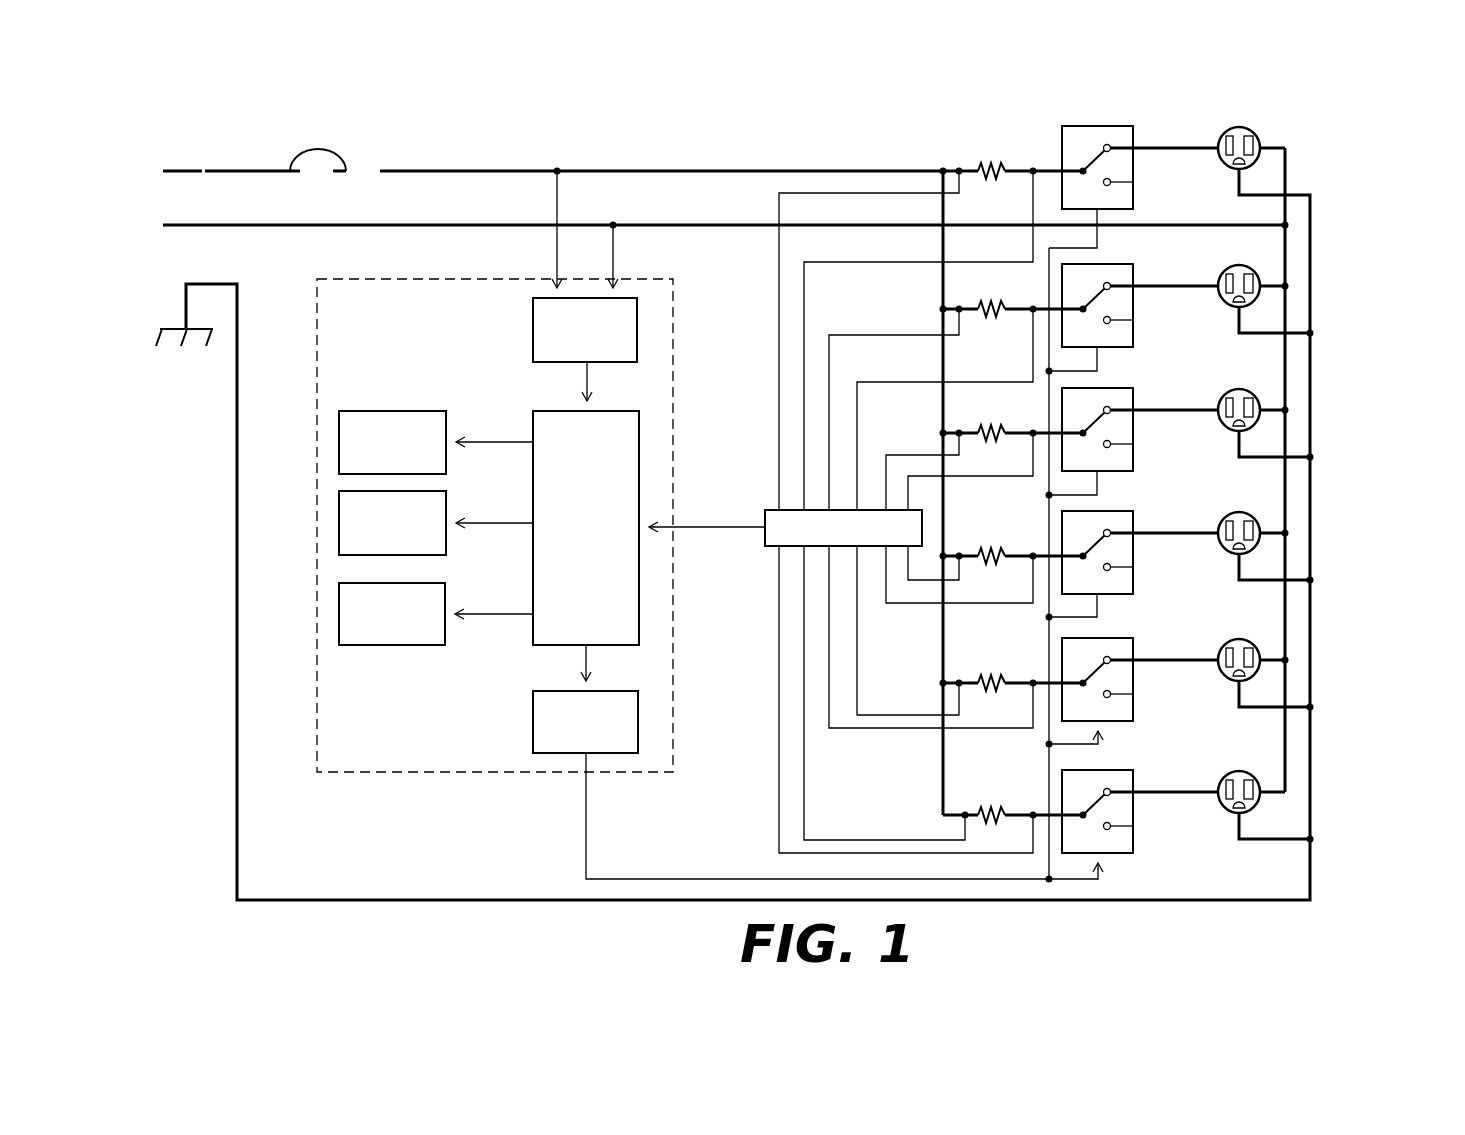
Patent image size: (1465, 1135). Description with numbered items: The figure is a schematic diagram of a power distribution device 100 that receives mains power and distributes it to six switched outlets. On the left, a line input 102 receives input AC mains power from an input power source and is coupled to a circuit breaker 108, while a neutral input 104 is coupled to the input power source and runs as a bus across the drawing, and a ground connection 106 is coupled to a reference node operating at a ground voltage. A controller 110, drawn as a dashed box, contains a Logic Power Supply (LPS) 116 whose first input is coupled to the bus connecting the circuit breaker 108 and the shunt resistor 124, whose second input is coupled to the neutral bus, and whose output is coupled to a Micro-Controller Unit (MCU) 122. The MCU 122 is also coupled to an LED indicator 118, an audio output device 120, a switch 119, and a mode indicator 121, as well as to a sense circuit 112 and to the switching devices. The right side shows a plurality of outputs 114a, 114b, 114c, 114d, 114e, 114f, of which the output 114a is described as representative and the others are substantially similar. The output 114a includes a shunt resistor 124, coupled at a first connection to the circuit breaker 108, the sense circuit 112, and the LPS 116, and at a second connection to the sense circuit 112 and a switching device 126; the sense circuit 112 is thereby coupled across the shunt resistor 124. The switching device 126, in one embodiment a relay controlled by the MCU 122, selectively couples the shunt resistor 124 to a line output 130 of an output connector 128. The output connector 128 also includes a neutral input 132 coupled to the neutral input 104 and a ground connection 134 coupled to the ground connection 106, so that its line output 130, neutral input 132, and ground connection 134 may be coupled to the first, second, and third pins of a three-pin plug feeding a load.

The power distribution device 100 is at (210, 120).
The line input 102 is at (163, 170).
The neutral input 104 is at (163, 225).
The ground connection 106 is at (170, 329).
The circuit breaker 108 is at (340, 150).
The controller 110 is at (315, 278).
The sense circuit 112 is at (768, 508).
The output 114a is at (1172, 157).
The output 114b is at (1330, 284).
The output 114c is at (1330, 410).
The output 114d is at (1330, 535).
The output 114e is at (1330, 657).
The output 114f is at (1330, 789).
The Logic Power Supply (LPS) 116 is at (533, 330).
The LED indicator 118 is at (339, 440).
The switch 119 is at (339, 612).
The audio output device 120 is at (339, 522).
The mode indicator 121 is at (533, 725).
The Micro-Controller Unit (MCU) 122 is at (533, 412).
The shunt resistor 124 is at (977, 168).
The switching device 126 is at (1063, 145).
The output connector 128 is at (1239, 157).
The line output 130 is at (1224, 157).
The neutral input 132 is at (1262, 143).
The ground connection 134 is at (1237, 172).